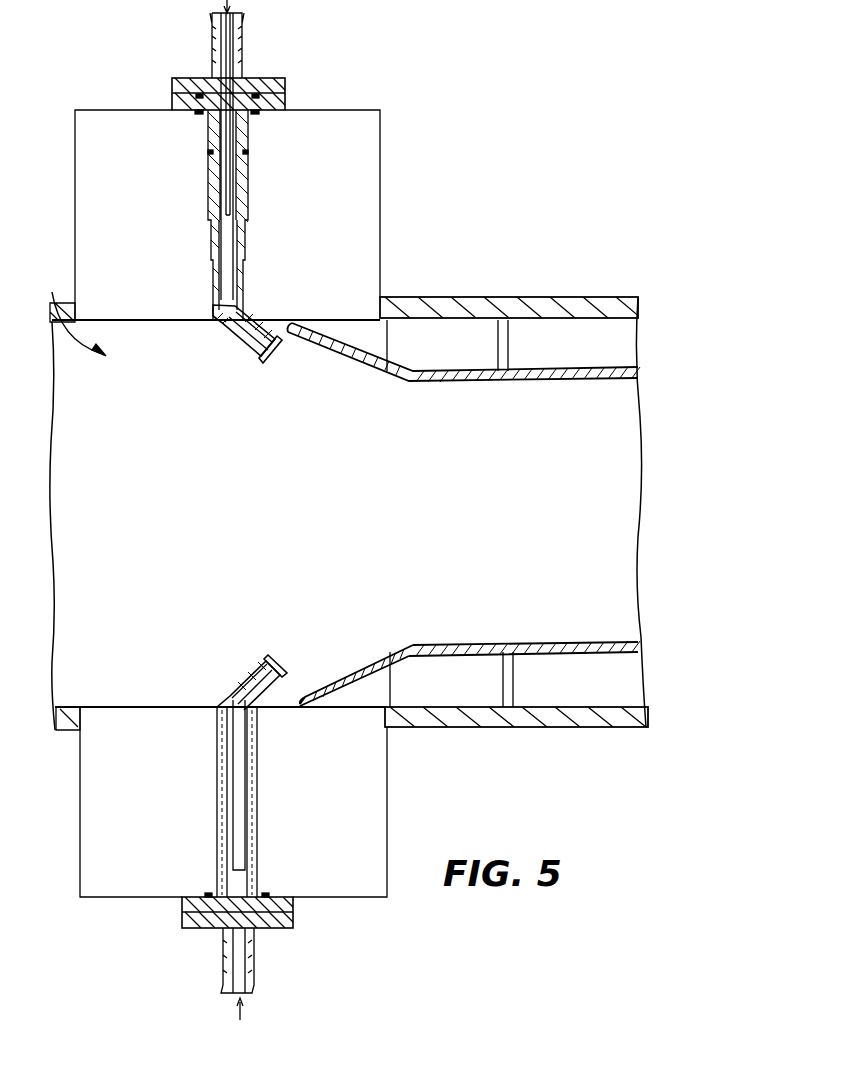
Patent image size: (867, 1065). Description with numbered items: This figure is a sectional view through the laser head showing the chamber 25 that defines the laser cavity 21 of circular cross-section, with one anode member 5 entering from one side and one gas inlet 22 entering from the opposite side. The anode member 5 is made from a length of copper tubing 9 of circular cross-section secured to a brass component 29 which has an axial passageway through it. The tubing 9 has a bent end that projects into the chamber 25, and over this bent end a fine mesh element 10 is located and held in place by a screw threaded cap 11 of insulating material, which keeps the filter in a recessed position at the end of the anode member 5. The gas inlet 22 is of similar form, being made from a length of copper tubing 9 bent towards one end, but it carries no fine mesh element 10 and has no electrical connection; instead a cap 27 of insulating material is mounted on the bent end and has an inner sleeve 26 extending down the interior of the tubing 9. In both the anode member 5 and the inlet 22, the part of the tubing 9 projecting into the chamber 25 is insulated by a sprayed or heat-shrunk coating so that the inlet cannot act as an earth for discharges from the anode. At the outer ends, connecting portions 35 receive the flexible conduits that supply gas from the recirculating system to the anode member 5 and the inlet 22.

The anode member 5 is at (285, 98).
The copper tubing 9 is at (248, 305).
The fine mesh element 10 is at (274, 348).
The screw threaded cap 11 is at (262, 352).
The laser cavity 21 is at (481, 480).
The gas inlet 22 is at (293, 910).
The chamber 25 is at (67, 310).
The inner sleeve 26 is at (238, 688).
The cap 27 is at (275, 683).
The brass component 29 is at (250, 183).
The connecting portion 35 is at (245, 50).